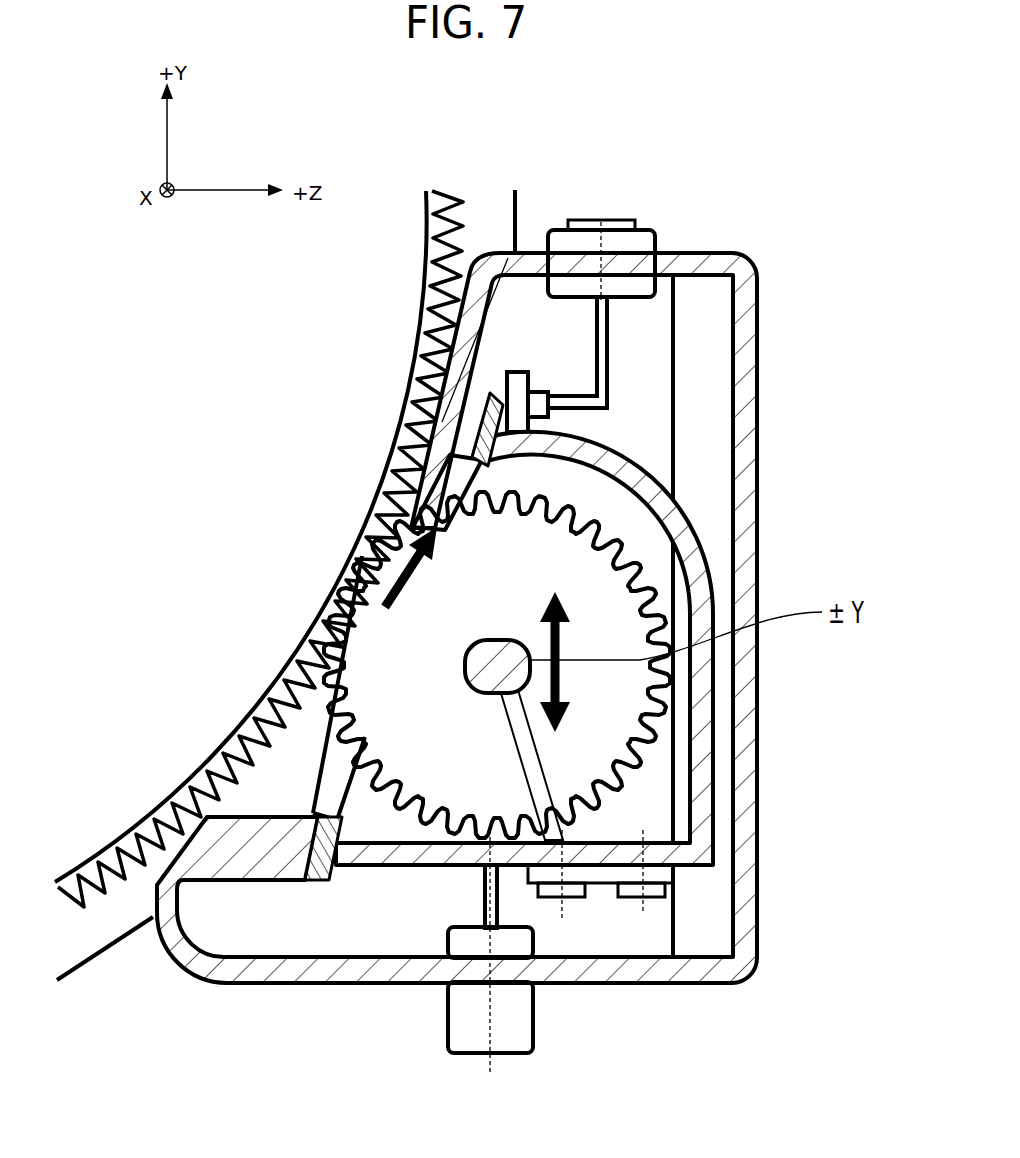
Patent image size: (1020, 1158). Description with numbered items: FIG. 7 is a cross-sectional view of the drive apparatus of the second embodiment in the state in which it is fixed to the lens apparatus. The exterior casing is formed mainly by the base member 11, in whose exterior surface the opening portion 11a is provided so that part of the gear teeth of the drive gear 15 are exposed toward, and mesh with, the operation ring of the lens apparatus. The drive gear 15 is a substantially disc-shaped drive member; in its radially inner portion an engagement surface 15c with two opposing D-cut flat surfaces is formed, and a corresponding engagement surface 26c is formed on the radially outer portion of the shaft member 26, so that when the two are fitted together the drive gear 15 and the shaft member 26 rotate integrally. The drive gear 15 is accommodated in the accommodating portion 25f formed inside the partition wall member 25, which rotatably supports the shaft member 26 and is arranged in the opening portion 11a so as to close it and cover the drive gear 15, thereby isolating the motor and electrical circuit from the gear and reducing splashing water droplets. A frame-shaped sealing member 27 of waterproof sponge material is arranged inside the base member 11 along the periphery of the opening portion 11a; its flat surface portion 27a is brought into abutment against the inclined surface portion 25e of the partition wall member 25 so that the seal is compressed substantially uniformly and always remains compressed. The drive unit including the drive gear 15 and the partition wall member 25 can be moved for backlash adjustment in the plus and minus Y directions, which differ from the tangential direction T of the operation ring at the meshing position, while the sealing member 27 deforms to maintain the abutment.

The base member 11 is at (740, 430).
The opening portion 11a is at (312, 745).
The drive gear 15 is at (487, 760).
The engagement surface 15c is at (537, 820).
The partition wall member 25 is at (700, 547).
The inclined surface portion 25e is at (505, 437).
The accommodating portion 25f is at (667, 740).
The shaft member 26 is at (465, 665).
The engagement surface 26c is at (520, 693).
The sealing member 27 is at (343, 790).
The flat surface portion 27a is at (510, 437).
The tangential direction T is at (360, 547).